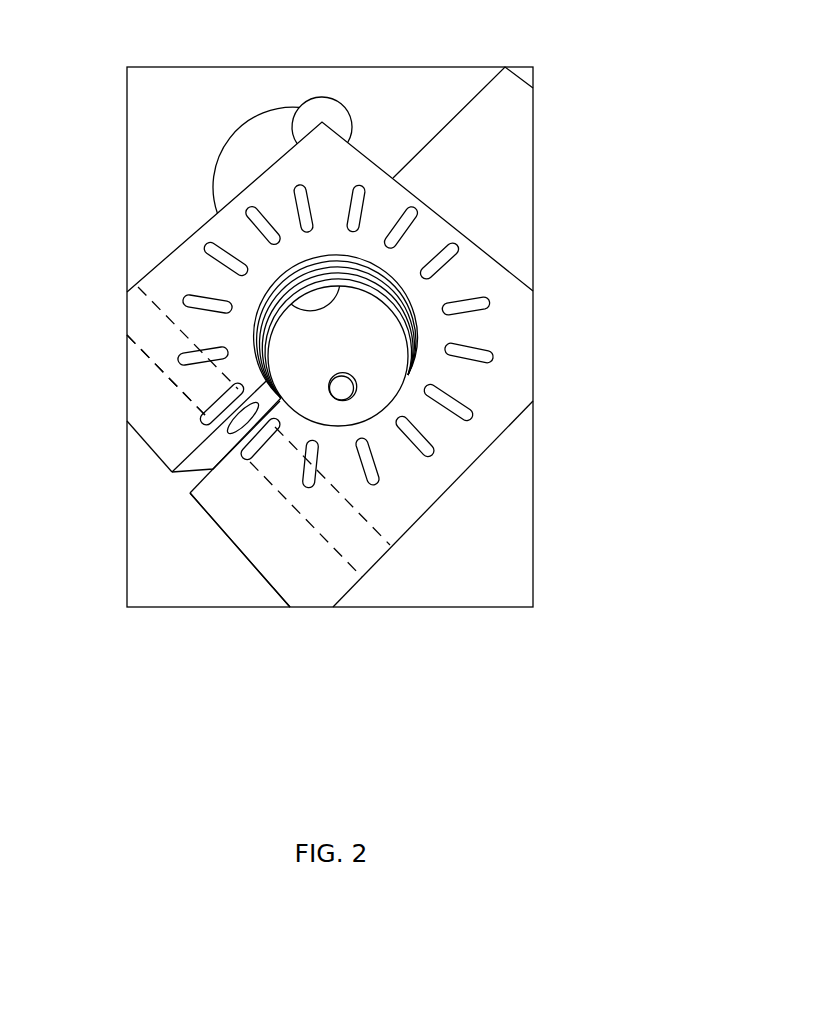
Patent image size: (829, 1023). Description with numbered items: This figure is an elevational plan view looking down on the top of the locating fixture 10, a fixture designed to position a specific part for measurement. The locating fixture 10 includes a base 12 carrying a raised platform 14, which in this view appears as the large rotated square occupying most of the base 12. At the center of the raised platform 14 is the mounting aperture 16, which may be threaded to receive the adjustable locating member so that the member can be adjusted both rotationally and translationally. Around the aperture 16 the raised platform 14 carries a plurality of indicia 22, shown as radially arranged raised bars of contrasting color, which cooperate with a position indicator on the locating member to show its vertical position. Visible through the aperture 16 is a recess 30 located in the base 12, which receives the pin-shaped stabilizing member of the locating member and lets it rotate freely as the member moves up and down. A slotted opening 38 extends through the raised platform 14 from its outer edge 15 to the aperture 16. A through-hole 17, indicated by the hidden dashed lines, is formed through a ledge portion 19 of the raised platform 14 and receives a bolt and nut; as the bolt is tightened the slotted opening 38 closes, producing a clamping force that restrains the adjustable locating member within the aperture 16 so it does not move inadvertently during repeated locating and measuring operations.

The locating fixture 10 is at (582, 143).
The base 12 is at (375, 138).
The raised platform 14 is at (505, 373).
The outer edge 15 is at (190, 493).
The mounting aperture 16 is at (413, 295).
The through-hole 17 is at (155, 322).
The ledge portion 19 is at (155, 388).
The indicia 22 is at (370, 458).
The recess 30 is at (360, 388).
The slotted opening 38 is at (203, 452).